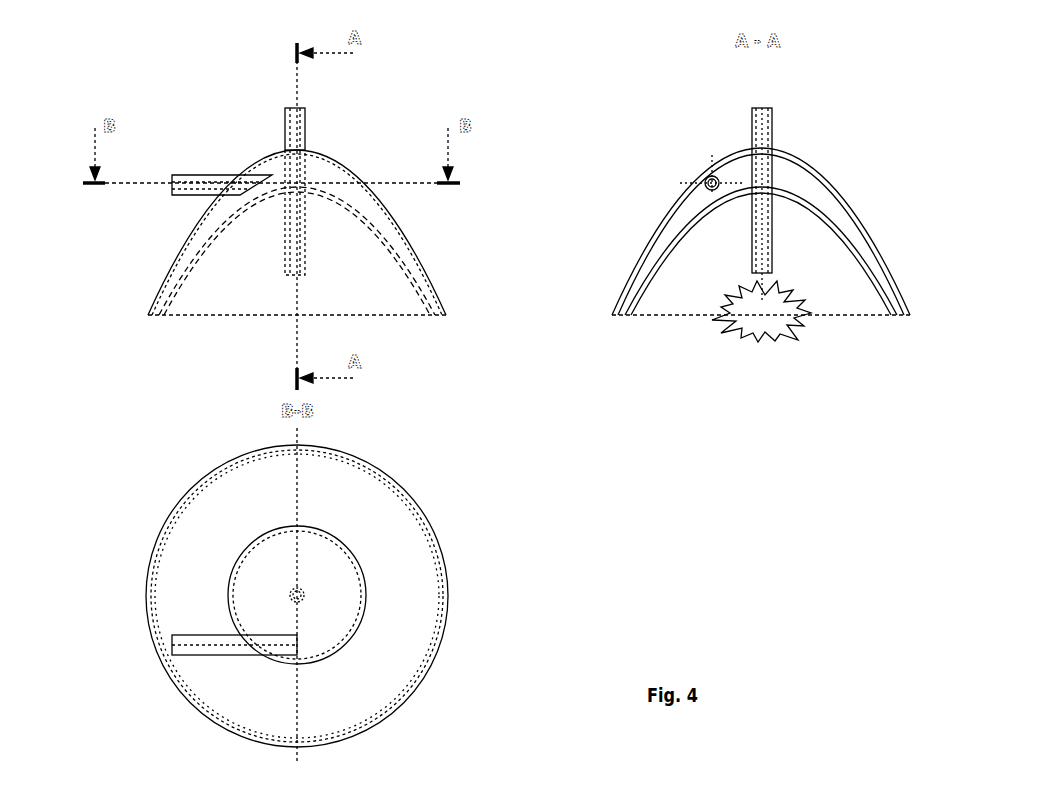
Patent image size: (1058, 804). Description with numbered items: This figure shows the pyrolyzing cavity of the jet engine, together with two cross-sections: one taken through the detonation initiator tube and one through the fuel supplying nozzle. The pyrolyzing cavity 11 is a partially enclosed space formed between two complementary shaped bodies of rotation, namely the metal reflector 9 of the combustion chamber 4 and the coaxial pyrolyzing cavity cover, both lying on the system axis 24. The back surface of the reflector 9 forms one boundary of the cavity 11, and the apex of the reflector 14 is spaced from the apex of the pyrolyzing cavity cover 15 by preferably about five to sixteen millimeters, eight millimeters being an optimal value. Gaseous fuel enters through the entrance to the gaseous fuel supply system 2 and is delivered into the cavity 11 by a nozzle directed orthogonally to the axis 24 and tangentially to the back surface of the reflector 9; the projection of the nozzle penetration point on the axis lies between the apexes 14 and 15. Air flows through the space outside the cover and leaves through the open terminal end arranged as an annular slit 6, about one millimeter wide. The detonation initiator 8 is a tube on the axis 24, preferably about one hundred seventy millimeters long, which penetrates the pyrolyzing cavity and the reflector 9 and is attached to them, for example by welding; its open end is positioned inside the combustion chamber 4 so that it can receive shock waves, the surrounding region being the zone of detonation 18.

The entrance to the gaseous fuel supply system 2 is at (183, 175).
The combustion chamber 4 is at (253, 262).
The open terminal end of gaseous oxidizer supply system forming as annular slit 6 is at (668, 205).
The detonation initiator as a tube 8 is at (310, 115).
The metal reflector 9 is at (662, 245).
The cavity in between complementary shaped bodies of rotation as reflector and pyrol 11 is at (808, 183).
The apex of reflector 14 is at (765, 182).
The apex of pyrolyzing cavity cover 15 is at (760, 150).
The zone of detonation 18 is at (768, 320).
The system axis 24 is at (297, 334).